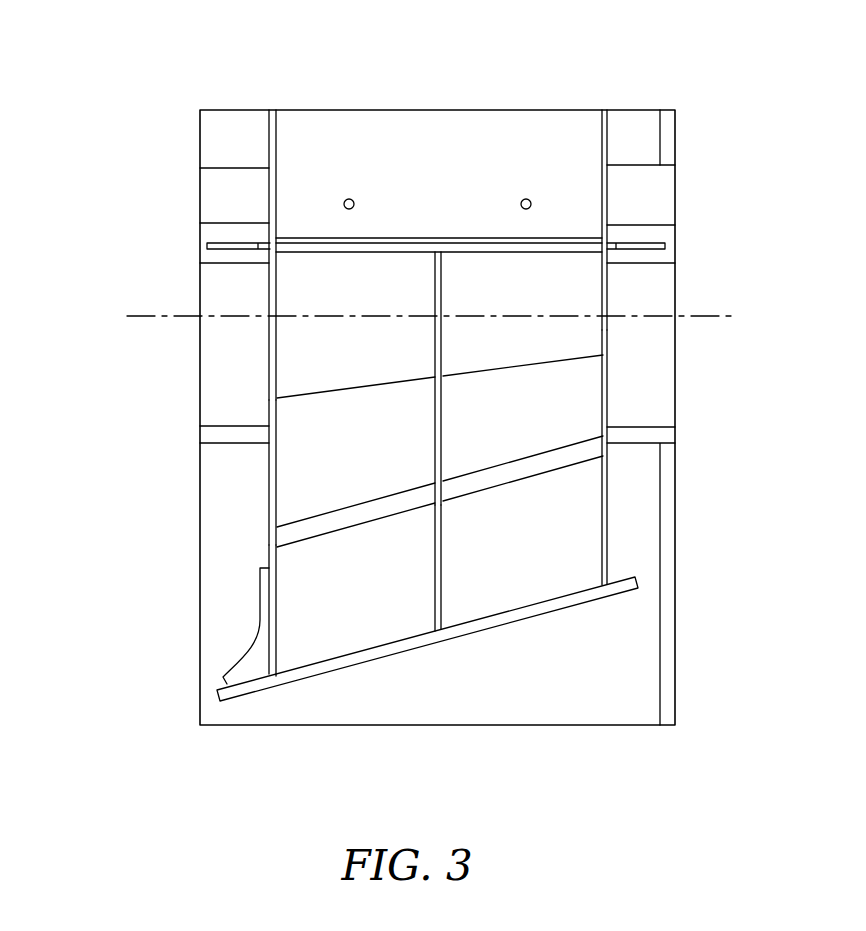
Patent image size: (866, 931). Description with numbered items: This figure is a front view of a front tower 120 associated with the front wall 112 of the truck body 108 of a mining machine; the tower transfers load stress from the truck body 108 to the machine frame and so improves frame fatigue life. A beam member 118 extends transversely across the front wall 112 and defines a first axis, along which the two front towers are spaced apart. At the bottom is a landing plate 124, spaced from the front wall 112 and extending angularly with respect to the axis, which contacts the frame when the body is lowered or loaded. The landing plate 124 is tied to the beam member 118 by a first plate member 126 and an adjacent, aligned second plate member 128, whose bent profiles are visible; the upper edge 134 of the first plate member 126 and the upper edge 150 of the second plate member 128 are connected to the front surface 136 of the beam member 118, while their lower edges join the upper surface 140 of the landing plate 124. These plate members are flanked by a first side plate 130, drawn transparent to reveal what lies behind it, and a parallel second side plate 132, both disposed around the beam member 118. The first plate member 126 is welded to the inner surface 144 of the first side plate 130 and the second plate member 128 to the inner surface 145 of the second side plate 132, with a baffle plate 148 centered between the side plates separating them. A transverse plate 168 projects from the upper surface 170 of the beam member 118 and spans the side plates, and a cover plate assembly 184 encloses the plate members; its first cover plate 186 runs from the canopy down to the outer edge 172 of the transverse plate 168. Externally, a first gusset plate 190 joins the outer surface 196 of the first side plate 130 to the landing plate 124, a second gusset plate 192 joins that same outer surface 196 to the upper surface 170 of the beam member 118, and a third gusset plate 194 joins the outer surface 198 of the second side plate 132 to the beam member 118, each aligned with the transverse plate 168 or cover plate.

The truck body 108 is at (190, 150).
The front wall 112 is at (207, 192).
The beam member 118 is at (656, 402).
The front tower 120 is at (615, 182).
The landing plate 124 is at (567, 602).
The first plate member 126 is at (375, 607).
The second plate member 128 is at (475, 587).
The first side plate 130 is at (270, 333).
The second side plate 132 is at (603, 498).
The upper edge 134 is at (380, 383).
The front surface 136 is at (217, 378).
The upper surface 140 is at (355, 650).
The inner surface 144 is at (278, 502).
The inner surface 145 is at (597, 331).
The baffle plate 148 is at (440, 550).
The upper edge 150 is at (502, 363).
The transverse plate 168 is at (606, 298).
The upper surface 170 is at (222, 232).
The outer edge 172 is at (304, 256).
The cover plate assembly 184 is at (568, 211).
The first cover plate 186 is at (317, 138).
The first gusset plate 190 is at (247, 658).
The second gusset plate 192 is at (215, 245).
The third gusset plate 194 is at (660, 247).
The outer surface 196 is at (268, 134).
The outer surface 198 is at (607, 142).